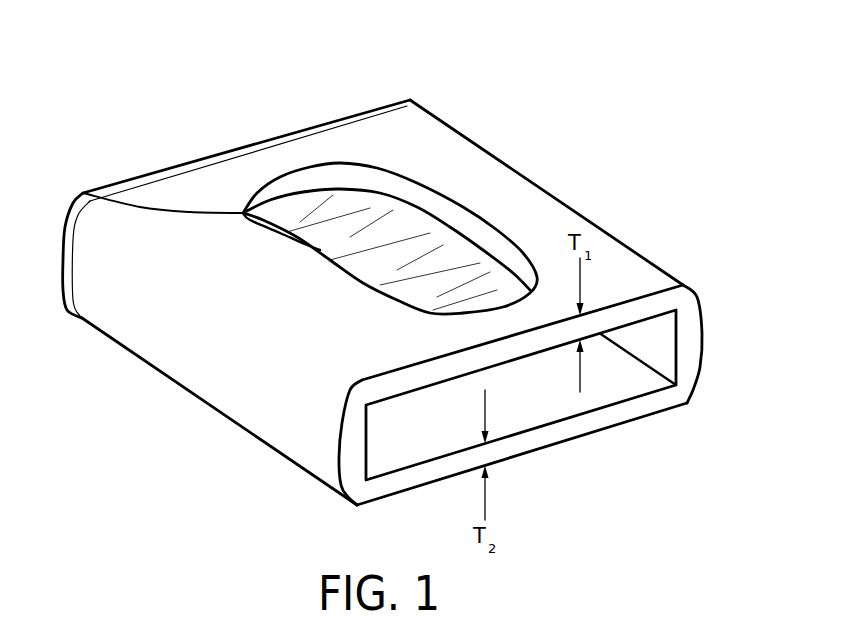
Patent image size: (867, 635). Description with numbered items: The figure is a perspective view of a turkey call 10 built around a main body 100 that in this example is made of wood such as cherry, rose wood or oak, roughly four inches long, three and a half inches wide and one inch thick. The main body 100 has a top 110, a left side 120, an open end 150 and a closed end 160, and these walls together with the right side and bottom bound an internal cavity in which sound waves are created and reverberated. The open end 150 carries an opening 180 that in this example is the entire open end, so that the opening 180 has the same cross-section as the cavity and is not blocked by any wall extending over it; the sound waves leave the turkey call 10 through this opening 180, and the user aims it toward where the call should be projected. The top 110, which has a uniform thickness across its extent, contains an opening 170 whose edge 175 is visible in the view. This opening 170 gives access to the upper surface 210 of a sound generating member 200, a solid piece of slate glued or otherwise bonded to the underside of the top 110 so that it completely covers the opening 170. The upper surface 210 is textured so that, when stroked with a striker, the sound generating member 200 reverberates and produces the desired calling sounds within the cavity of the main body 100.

The turkey call 10 is at (531, 93).
The main body 100 is at (620, 262).
The top 110 is at (407, 138).
The left side 120 is at (243, 390).
The open end 150 is at (687, 338).
The closed end 160 is at (197, 163).
The opening 170 is at (107, 193).
The edge 175 is at (292, 175).
The opening 180 is at (603, 388).
The sound generating member 200 is at (460, 247).
The upper surface 210 is at (500, 277).